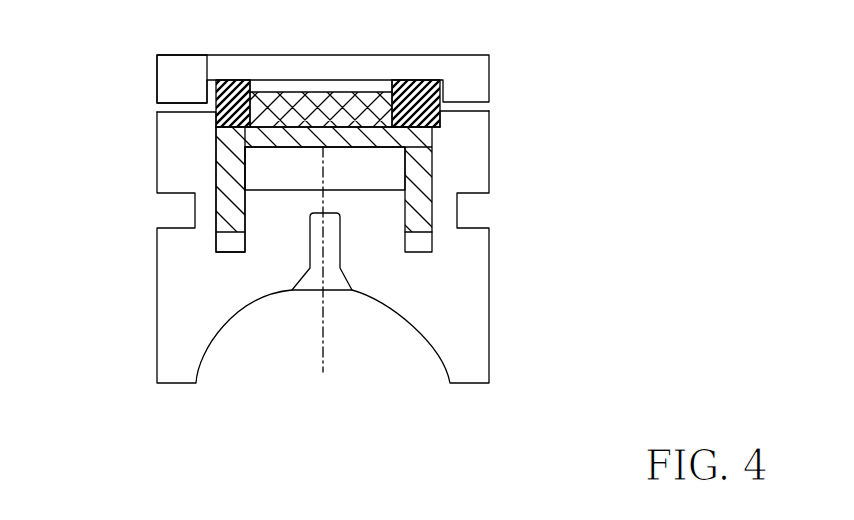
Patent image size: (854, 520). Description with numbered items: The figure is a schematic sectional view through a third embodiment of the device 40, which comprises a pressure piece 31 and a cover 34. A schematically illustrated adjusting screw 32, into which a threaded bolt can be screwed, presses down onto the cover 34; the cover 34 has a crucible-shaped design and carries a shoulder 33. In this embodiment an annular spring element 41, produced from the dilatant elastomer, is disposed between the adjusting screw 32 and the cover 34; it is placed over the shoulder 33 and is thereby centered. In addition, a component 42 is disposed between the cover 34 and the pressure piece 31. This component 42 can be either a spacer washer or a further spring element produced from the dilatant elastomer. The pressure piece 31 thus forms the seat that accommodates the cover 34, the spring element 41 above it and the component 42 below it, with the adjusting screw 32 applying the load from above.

The pressure piece 31 is at (462, 331).
The adjusting screw 32 is at (182, 75).
The shoulder 33 is at (283, 103).
The cover 34 is at (214, 232).
The device 40 is at (580, 197).
The annular spring element 41 is at (443, 90).
The component 42 is at (357, 173).